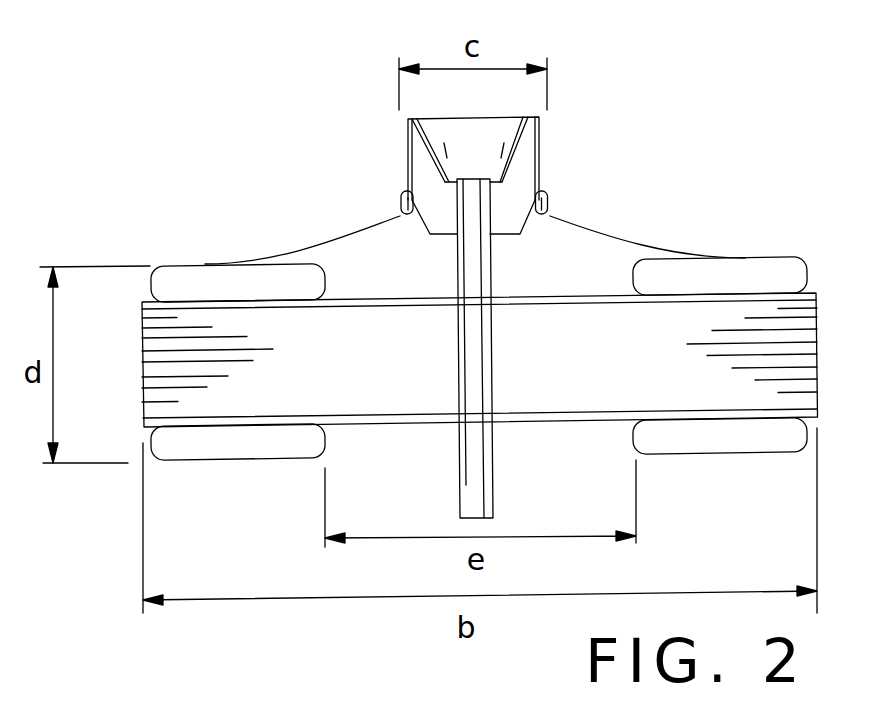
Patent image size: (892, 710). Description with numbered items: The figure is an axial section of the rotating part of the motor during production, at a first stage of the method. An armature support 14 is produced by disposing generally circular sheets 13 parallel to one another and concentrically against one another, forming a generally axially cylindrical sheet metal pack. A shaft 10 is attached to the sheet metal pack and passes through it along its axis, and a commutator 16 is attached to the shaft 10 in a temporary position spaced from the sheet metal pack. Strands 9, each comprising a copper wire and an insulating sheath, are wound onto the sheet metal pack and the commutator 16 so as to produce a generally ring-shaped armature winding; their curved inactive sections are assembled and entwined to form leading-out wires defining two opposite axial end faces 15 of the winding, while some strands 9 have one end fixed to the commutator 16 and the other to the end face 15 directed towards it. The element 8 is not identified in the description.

The carrier plate 8 is at (443, 442).
The strands 9 is at (360, 232).
The shaft 10 is at (477, 493).
The circular sheets 13 is at (800, 365).
The armature support 14 is at (180, 362).
The axial end faces 15 is at (770, 258).
The commutator 16 is at (522, 172).